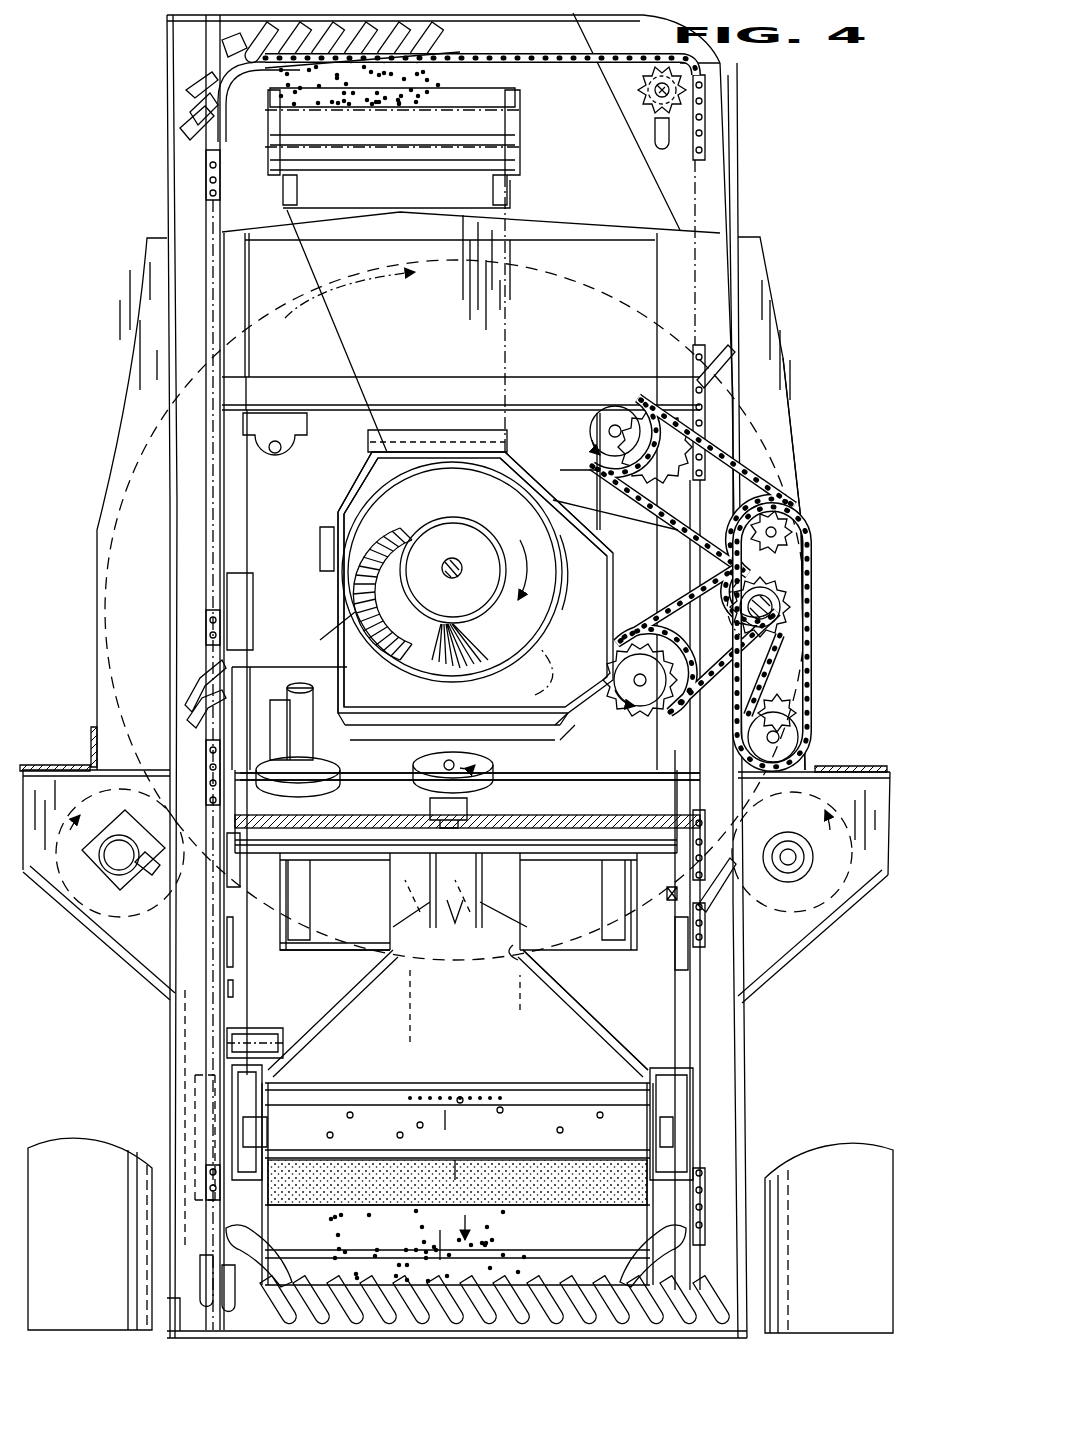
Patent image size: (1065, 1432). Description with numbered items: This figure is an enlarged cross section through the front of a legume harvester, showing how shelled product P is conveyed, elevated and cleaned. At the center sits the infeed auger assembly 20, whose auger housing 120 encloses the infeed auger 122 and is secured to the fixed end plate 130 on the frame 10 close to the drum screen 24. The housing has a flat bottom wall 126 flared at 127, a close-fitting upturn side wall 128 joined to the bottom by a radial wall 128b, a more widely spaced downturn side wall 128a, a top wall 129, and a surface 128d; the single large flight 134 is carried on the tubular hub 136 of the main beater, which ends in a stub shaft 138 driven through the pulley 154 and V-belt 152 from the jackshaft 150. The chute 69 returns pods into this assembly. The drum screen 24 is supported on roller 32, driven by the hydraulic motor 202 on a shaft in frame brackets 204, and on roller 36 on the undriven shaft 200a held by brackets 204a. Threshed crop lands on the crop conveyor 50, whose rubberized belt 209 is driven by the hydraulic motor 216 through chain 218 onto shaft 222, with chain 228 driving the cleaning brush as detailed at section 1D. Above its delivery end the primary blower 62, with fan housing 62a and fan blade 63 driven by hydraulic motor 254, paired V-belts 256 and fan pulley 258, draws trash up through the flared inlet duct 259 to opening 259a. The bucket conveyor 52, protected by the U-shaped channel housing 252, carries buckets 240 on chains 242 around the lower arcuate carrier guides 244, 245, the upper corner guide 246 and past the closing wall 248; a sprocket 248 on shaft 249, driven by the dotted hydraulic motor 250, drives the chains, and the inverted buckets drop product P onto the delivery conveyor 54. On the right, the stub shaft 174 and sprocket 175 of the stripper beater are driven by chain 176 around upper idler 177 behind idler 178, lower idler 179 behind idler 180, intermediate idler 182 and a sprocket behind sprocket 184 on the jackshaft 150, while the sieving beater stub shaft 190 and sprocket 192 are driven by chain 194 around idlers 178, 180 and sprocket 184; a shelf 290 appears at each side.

The frame 10 is at (700, 1097).
The section line 1D is at (183, 1013).
The infeed auger assembly 20 is at (333, 503).
The drum screen 24 is at (545, 268).
The roller 32 is at (37, 897).
The roller 36 is at (825, 907).
The crop conveyor 50 is at (605, 1080).
The bucket conveyor 52 is at (192, 100).
The delivery conveyor 54 is at (495, 104).
The primary blower 62 is at (515, 848).
The fan housing 62a is at (325, 953).
The fan blade 63 is at (474, 901).
The chute 69 is at (341, 308).
The auger housing 120 is at (345, 498).
The infeed auger 122 is at (352, 570).
The bottom wall 126 is at (480, 720).
The flared bottom inlet 127 is at (543, 745).
The side wall 128 is at (335, 553).
The downturn side wall 128a is at (589, 504).
The radial wall 128b is at (330, 648).
The housing ring 128d is at (583, 615).
The top wall 129 is at (390, 458).
The end plate 130 is at (450, 325).
The flight 134 is at (452, 572).
The tubular hub 136 is at (500, 588).
The stub shaft 138 is at (451, 557).
The jackshaft 150 is at (772, 615).
The V-belt 152 is at (548, 443).
The pulley 154 is at (523, 675).
The front stub shaft 174 is at (610, 428).
The sprocket 175 is at (635, 393).
The chain 176 is at (763, 478).
The upper idler 177 is at (790, 547).
The upper front idler 178 is at (792, 521).
The lower idler 179 is at (806, 702).
The lower front idler 180 is at (788, 724).
The intermediate idler 182 is at (784, 660).
The front sprocket 184 is at (786, 637).
The front stub shaft 190 is at (634, 680).
The sprocket 192 is at (640, 706).
The chain 194 is at (652, 598).
The shaft 200a is at (789, 855).
The hydraulic motor 202 is at (120, 867).
The frame brackets 204 is at (123, 956).
The brackets 204a is at (778, 958).
The belt 209 is at (457, 1184).
The hydraulic motor 216 is at (270, 1027).
The chain 218 is at (232, 1078).
The shaft 222 is at (189, 1119).
The chain 228 is at (402, 1124).
The buckets 240 is at (197, 77).
The chains 242 is at (690, 128).
The lower arcuate carrier guide 244 is at (677, 1244).
The lower arcuate carrier guide 245 is at (245, 1244).
The upper corner guide 246 is at (267, 80).
The sprocket 248 is at (218, 197).
The shaft 249 is at (655, 92).
The hydraulic motor 250 is at (640, 122).
The channel housing 252 is at (168, 142).
The hydraulic motor 254 is at (312, 690).
The V-belts 256 is at (391, 784).
The fan pulley 258 is at (450, 755).
The inlet duct 259 is at (548, 990).
The opening 259a is at (522, 957).
The shelf 290 is at (50, 767).
The product P is at (440, 95).